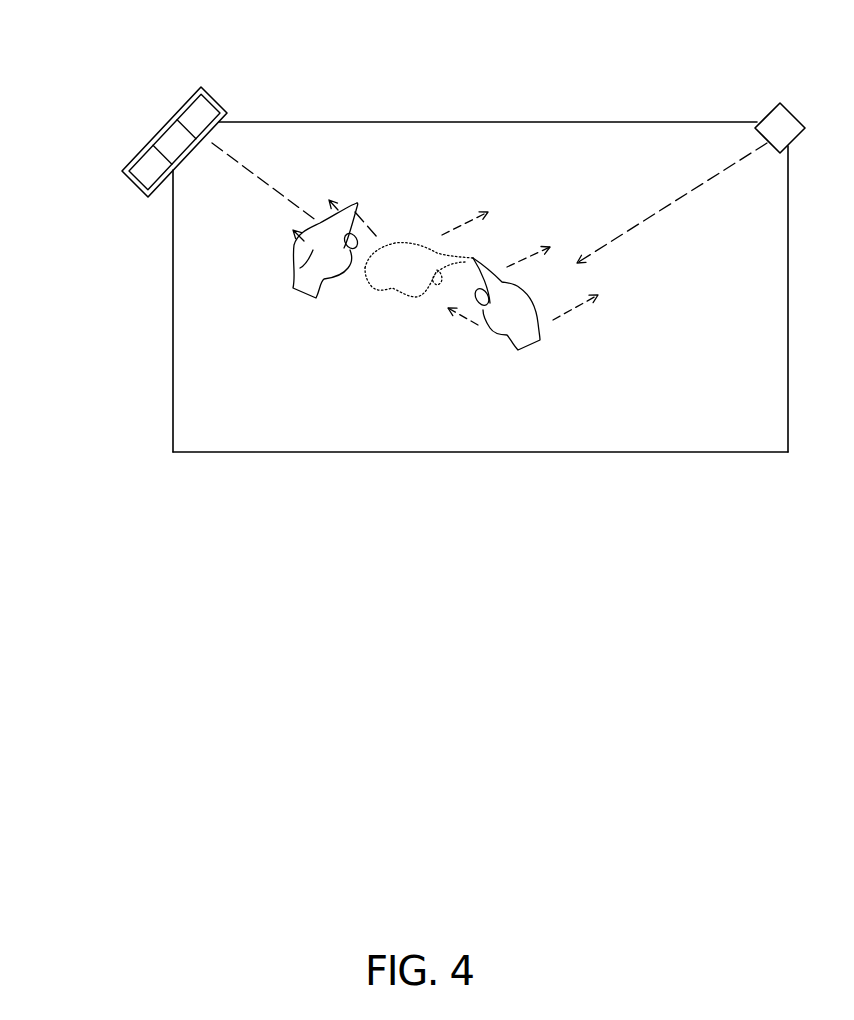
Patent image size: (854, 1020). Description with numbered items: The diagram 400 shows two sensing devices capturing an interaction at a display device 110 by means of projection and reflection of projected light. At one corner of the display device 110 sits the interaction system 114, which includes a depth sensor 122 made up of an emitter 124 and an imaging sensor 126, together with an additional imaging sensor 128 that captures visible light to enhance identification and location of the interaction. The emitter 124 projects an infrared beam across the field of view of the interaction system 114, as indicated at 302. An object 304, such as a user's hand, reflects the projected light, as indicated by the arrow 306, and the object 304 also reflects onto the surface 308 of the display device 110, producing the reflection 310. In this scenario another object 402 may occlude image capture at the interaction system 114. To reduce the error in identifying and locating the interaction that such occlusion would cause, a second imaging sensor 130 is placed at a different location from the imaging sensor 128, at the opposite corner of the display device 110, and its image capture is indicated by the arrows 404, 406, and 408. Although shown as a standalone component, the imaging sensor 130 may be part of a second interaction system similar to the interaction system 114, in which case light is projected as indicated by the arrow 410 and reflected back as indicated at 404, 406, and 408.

The diagram of two depth sensors capturing an interaction 400 is at (435, 941).
The display device 110 is at (173, 273).
The surface of a display device 308 is at (243, 353).
The imaging sensor 128 is at (195, 118).
The interaction system 114 is at (172, 120).
The depth sensor 122 is at (174, 142).
The imaging sensor 126 is at (173, 143).
The emitter 124 is at (148, 170).
The imaging sensor 130 is at (790, 110).
The projected light 302 is at (252, 173).
The arrow indicating projected light 410 is at (657, 212).
The object 402 is at (295, 272).
The object 304 is at (488, 335).
The reflection 310 is at (395, 288).
The arrow 404 is at (458, 228).
The arrow 408 is at (527, 253).
The arrow 306 is at (465, 317).
The arrow 406 is at (573, 310).